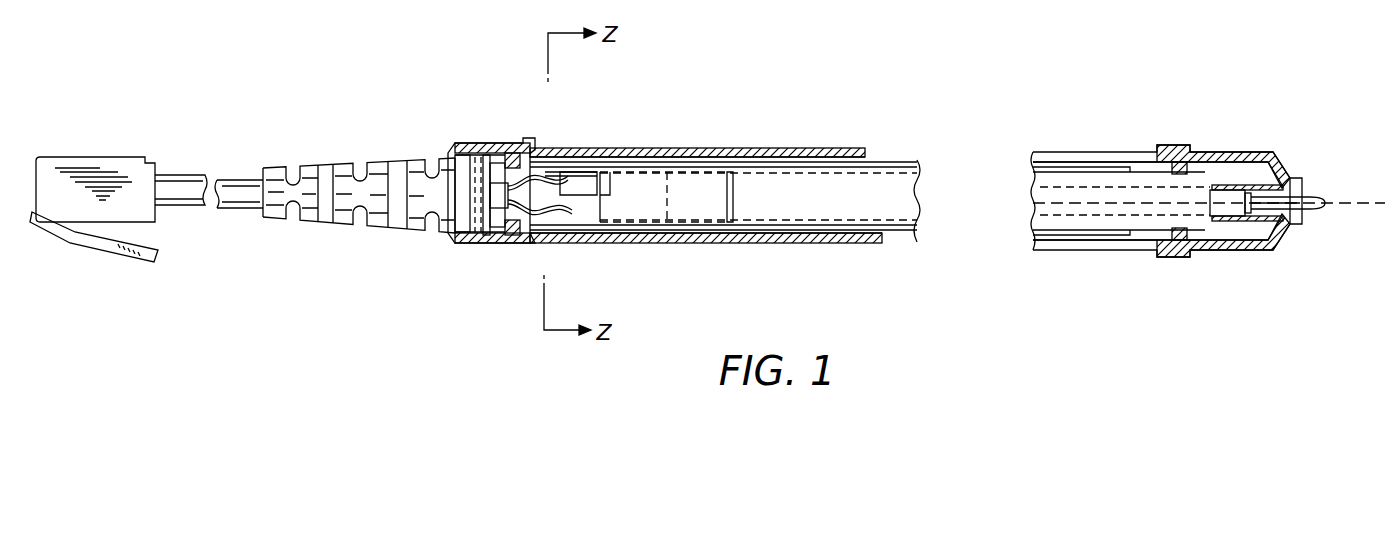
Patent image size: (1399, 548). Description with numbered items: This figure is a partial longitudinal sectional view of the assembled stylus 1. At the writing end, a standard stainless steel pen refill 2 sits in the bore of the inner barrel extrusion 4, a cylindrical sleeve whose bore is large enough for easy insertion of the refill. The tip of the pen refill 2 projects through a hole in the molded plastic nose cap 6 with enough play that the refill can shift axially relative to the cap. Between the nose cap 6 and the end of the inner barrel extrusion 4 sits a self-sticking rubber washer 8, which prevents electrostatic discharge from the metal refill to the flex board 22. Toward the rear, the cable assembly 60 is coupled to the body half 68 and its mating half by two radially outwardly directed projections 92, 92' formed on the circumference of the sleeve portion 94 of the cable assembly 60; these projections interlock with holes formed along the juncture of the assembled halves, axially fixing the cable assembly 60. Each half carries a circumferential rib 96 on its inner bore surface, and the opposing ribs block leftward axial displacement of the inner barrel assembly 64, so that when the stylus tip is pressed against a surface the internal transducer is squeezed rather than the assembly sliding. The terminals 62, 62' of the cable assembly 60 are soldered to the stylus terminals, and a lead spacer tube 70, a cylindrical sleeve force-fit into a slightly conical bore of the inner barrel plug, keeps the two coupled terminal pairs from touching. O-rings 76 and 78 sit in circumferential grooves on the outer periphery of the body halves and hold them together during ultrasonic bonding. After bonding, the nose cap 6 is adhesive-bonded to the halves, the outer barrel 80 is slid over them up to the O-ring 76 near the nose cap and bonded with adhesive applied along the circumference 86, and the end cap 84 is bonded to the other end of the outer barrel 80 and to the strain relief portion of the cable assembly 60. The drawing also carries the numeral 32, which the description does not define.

The stylus 1 is at (803, 122).
The pen refill 2 is at (1330, 212).
The inner barrel extrusion 4 is at (1255, 222).
The nose cap 6 is at (1175, 148).
The rubber washer 8 is at (1288, 175).
The flex board 22 is at (1240, 185).
The optical axis 32 is at (1363, 200).
The cable assembly 60 is at (262, 211).
The terminal of cable assembly 62 is at (560, 239).
The terminal of cable assembly 62' is at (545, 146).
The inner barrel assembly 64 is at (633, 200).
The body half 68 is at (890, 163).
The lead spacer tube 70 is at (593, 178).
The O-ring 76 is at (1180, 243).
The O-ring 78 is at (510, 155).
The outer barrel 80 is at (850, 245).
The end cap 84 is at (464, 246).
The adhesive circumference 86 is at (1123, 160).
The radially outwardly directed projection 92 is at (465, 167).
The radially outwardly directed projection 92' is at (510, 227).
The sleeve portion 94 is at (442, 232).
The circumferential rib 96 is at (606, 160).